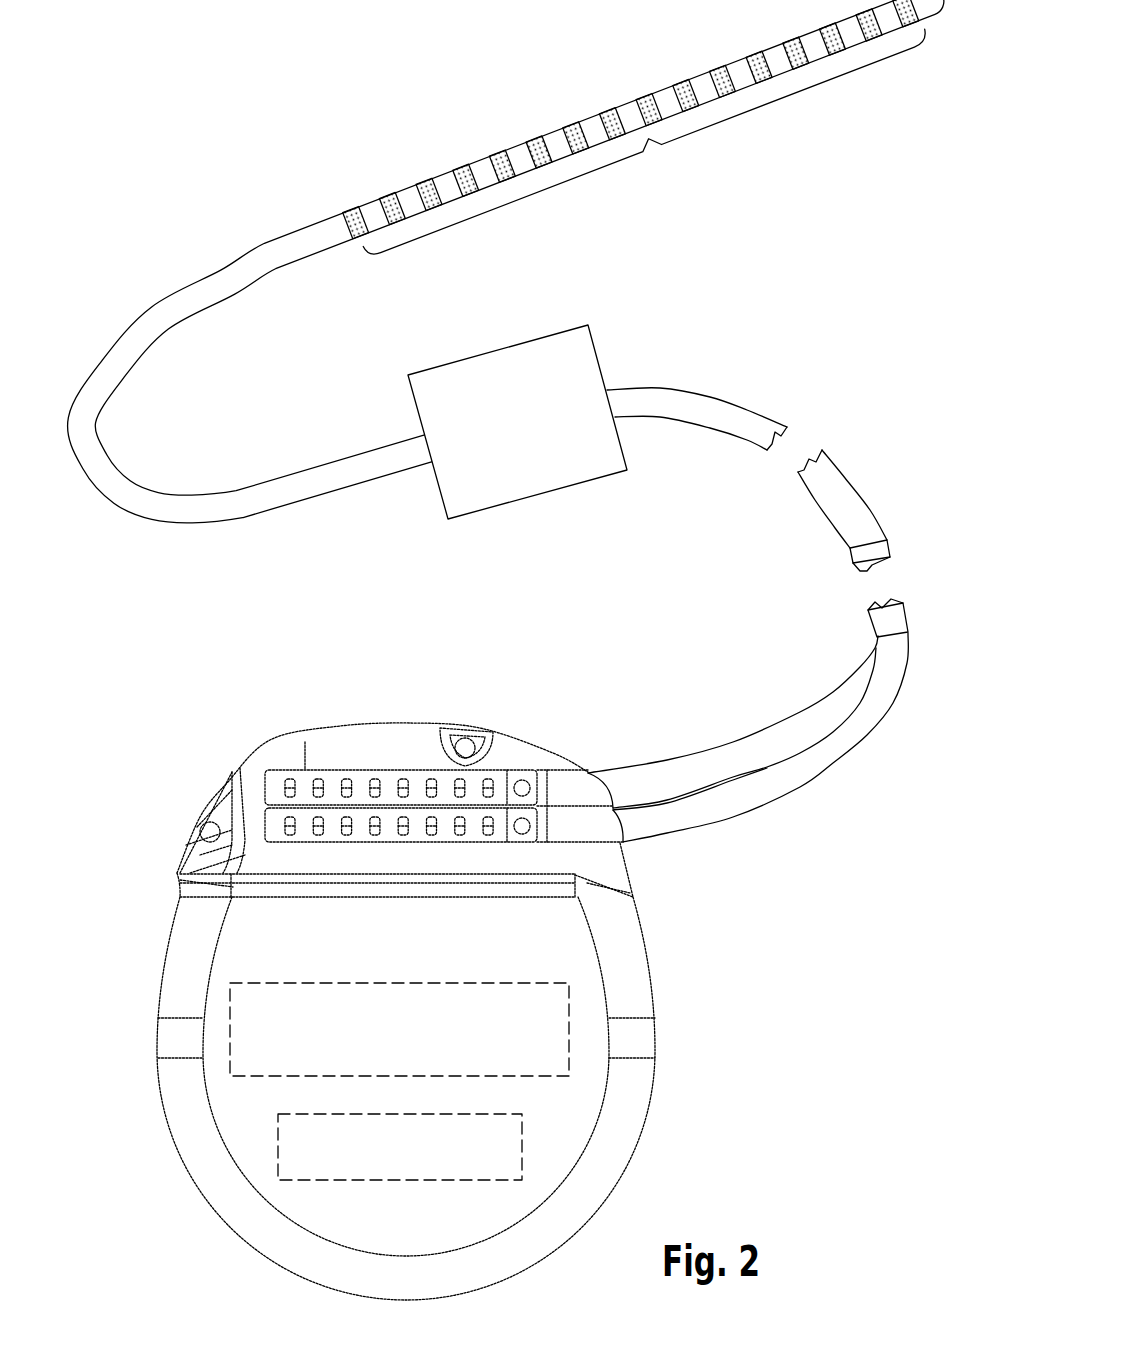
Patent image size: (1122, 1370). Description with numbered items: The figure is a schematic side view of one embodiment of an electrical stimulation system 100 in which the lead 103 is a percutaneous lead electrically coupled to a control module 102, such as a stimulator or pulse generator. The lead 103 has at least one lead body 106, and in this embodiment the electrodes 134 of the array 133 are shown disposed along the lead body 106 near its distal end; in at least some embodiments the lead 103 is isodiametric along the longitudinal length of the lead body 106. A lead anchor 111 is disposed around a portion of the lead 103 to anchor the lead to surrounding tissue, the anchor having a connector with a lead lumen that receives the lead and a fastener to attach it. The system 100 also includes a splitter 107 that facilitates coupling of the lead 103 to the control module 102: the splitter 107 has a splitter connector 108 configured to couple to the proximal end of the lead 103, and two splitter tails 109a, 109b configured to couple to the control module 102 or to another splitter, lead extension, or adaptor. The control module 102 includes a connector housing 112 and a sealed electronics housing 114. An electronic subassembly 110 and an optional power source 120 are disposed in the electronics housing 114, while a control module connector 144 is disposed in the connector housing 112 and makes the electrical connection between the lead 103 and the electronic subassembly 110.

The electrical stimulation system 100 is at (190, 106).
The control module 102 is at (110, 748).
The lead 103 is at (120, 234).
The lead body 106 is at (680, 402).
The splitter 107 is at (763, 643).
The splitter connector 108 is at (862, 582).
The splitter tail 109a is at (740, 748).
The splitter tail 109b is at (833, 758).
The electronic subassembly 110 is at (249, 1034).
The lead anchor 111 is at (533, 352).
The connector housing 112 is at (387, 742).
The electronics housing 114 is at (230, 923).
The power source 120 is at (296, 1150).
The array of electrodes 133 is at (646, 143).
The electrode 134 is at (682, 80).
The control module connector 144 is at (336, 768).